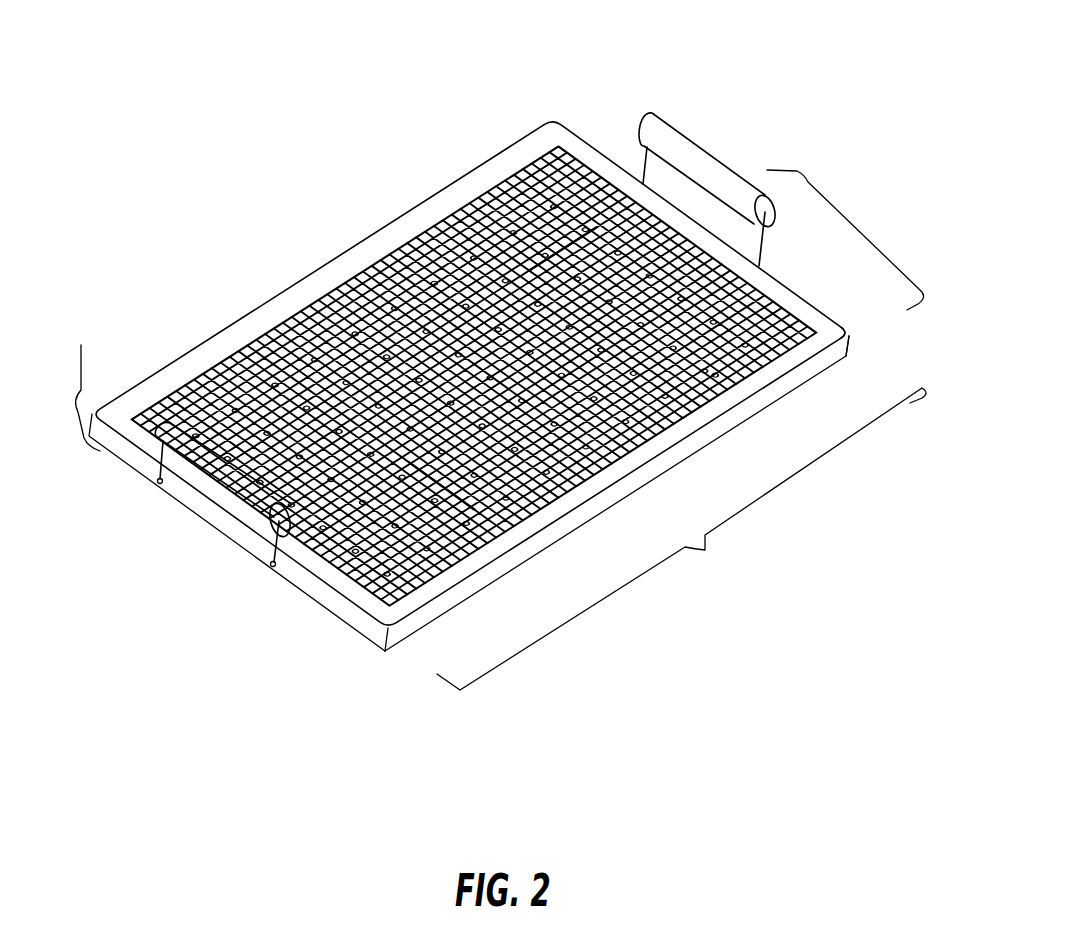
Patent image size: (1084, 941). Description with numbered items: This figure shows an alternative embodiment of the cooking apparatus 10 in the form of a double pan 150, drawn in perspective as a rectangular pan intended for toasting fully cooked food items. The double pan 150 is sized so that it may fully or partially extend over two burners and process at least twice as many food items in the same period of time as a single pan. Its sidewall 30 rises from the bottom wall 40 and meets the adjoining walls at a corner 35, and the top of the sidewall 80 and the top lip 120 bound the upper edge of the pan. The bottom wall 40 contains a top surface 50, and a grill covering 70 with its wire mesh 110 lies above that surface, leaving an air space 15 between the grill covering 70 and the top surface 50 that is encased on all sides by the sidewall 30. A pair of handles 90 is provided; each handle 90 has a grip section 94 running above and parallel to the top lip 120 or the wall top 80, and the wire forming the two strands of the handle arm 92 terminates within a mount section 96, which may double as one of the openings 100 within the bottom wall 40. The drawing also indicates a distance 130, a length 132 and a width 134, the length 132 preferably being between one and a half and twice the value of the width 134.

The cooking apparatus 10 is at (503, 29).
The air space 15 is at (474, 375).
The sidewall 30 is at (545, 547).
The corner 35 is at (387, 653).
The bottom wall 40 is at (297, 605).
The top surface 50 is at (474, 375).
The grill covering 70 is at (790, 308).
The top of the sidewall 80 is at (851, 331).
The handle 90 is at (452, 333).
The handle arm 92 is at (630, 119).
The grip section 94 is at (688, 152).
The mount section 96 is at (535, 368).
The openings 100 is at (440, 382).
The wire mesh 110 is at (715, 375).
The top lip 120 is at (820, 348).
The distance 130 is at (81, 345).
The length 132 is at (702, 550).
The width 134 is at (800, 172).
The double pan 150 is at (345, 232).